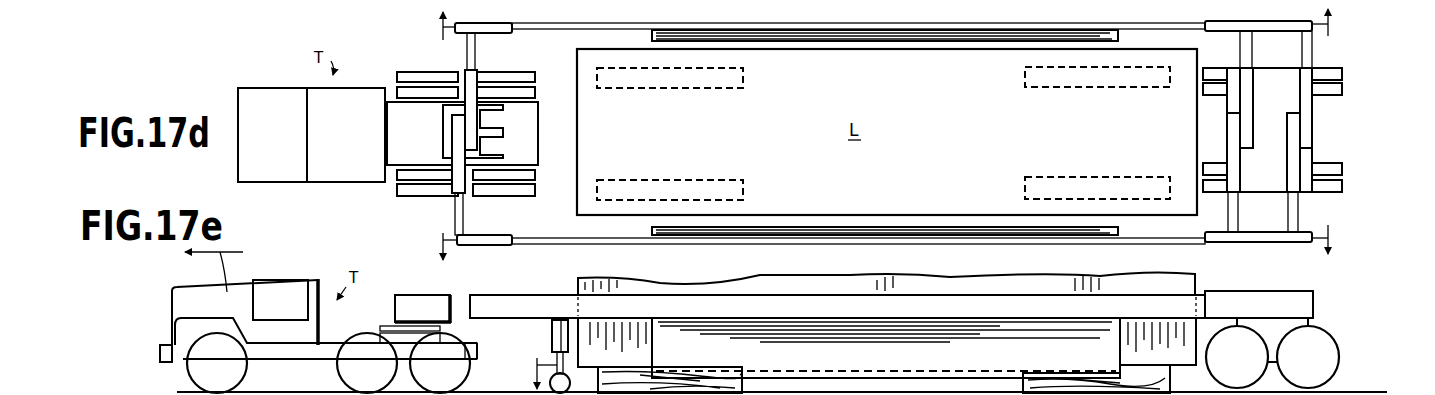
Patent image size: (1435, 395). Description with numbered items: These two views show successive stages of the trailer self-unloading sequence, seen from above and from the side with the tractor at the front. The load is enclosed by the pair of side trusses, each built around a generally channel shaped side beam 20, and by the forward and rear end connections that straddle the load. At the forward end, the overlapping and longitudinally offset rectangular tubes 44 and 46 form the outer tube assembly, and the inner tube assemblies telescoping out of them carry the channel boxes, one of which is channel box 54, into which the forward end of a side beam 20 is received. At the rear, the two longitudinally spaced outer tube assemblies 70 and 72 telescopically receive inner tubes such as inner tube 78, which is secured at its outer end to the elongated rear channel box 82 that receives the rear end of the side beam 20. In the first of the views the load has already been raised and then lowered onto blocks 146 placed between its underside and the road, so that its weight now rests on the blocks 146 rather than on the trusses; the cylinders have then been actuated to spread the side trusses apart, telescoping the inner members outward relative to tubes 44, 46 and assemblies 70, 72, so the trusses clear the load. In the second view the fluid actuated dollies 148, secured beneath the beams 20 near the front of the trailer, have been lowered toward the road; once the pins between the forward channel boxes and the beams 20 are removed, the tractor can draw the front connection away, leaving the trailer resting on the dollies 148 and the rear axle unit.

In FIG. 17D, the side channel shaped beam 20 is at (953, 30).
In FIG. 17E, the side channel shaped beam 20 is at (1030, 308).
In FIG. 17D, the rectangular shaped tube 44 is at (473, 80).
In FIG. 17D, the rectangular shaped tube 46 is at (455, 137).
In FIG. 17D, the channel box 54 is at (503, 246).
In FIG. 17E, the channel box 54 is at (431, 297).
In FIG. 17D, the outer tube assembly 70 is at (1227, 155).
In FIG. 17D, the outer tube assembly 72 is at (1310, 119).
In FIG. 17D, the inner tube 78 is at (1252, 52).
In FIG. 17E, the rear channel box 82 is at (1265, 302).
In FIG. 17D, the blocks 146 is at (717, 88).
In FIG. 17E, the fluid actuated dollies 148 is at (552, 337).